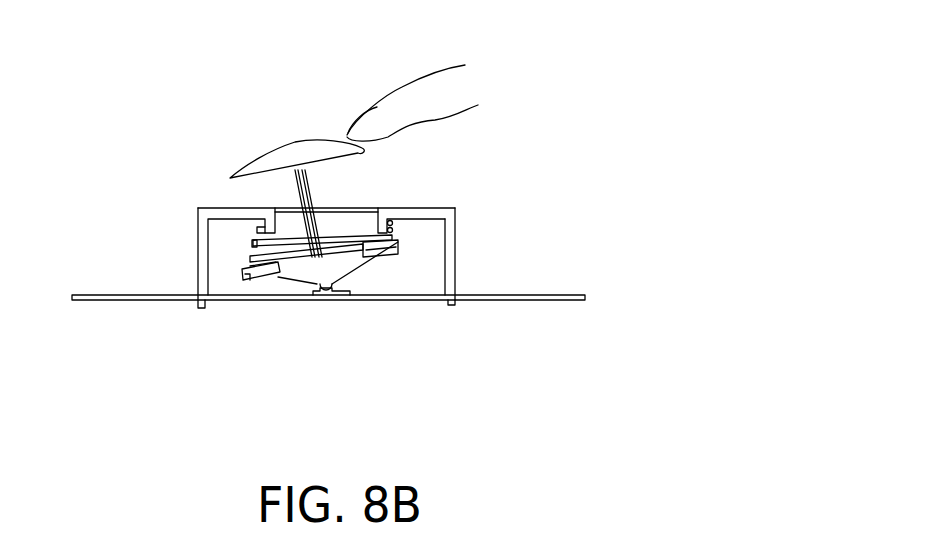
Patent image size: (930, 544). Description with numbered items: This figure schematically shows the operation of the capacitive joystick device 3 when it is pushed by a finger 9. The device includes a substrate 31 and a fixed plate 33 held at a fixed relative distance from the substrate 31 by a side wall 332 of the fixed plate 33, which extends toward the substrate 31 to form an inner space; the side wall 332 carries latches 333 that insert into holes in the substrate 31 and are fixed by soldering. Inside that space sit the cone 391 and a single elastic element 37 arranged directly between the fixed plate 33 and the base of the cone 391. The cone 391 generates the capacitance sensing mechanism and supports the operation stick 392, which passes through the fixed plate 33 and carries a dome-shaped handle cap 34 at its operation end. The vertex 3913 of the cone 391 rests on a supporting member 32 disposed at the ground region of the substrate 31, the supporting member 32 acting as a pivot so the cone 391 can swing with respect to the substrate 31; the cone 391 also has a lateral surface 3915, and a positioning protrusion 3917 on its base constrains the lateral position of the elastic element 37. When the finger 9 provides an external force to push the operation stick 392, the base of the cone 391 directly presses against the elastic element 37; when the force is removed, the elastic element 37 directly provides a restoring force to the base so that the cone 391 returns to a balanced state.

The capacitive joystick device 3 is at (613, 52).
The finger 9 is at (422, 102).
The substrate 31 is at (585, 297).
The supporting member 32 is at (325, 296).
The fixed plate 33 is at (433, 208).
The handle cap 34 is at (315, 148).
The elastic element 37 is at (252, 242).
The side wall 332 is at (455, 228).
The latches 333 is at (452, 305).
The cone 391 is at (376, 314).
The operation stick 392 is at (308, 193).
The vertex 3913 is at (338, 289).
The lateral surface 3915 is at (278, 285).
The positioning protrusion 3917 is at (398, 242).